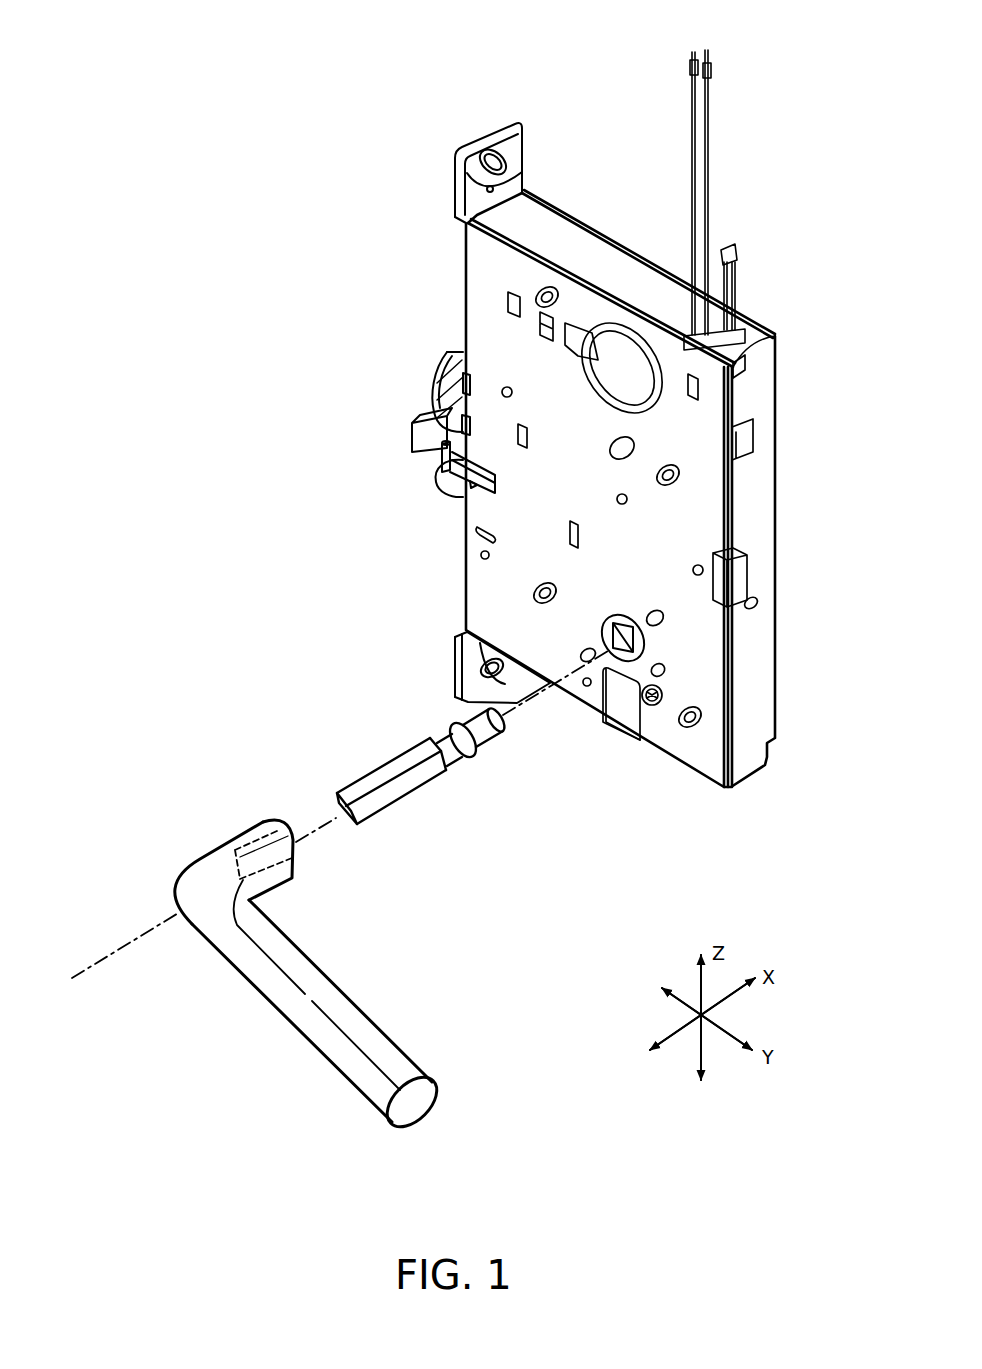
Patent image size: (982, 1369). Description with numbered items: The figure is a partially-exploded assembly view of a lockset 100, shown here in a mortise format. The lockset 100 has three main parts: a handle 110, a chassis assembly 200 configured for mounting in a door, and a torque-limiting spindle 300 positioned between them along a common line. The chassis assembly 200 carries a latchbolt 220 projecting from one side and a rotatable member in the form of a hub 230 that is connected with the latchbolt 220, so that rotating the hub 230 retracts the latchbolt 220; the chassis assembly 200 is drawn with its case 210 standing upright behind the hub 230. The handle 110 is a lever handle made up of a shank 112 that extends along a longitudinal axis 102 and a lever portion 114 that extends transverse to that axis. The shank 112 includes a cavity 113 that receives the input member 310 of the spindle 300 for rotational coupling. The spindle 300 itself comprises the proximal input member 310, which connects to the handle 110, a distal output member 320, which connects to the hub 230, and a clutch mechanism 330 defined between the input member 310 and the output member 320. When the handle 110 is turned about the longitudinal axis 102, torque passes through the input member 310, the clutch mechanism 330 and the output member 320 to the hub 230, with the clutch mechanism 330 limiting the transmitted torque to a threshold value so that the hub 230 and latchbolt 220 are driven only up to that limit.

The lockset 100 is at (240, 232).
The chassis assembly 200 is at (406, 307).
The lock case 210 is at (806, 472).
The latchbolt 220 is at (366, 420).
The hub 230 is at (604, 624).
The torque-limiting spindle 300 is at (385, 664).
The input member 310 is at (388, 806).
The output member 320 is at (500, 740).
The clutch mechanism 330 is at (462, 785).
The handle 110 is at (134, 910).
The longitudinal axis 102 is at (116, 945).
The shank 112 is at (233, 845).
The cavity 113 is at (291, 826).
The lever portion 114 is at (228, 963).